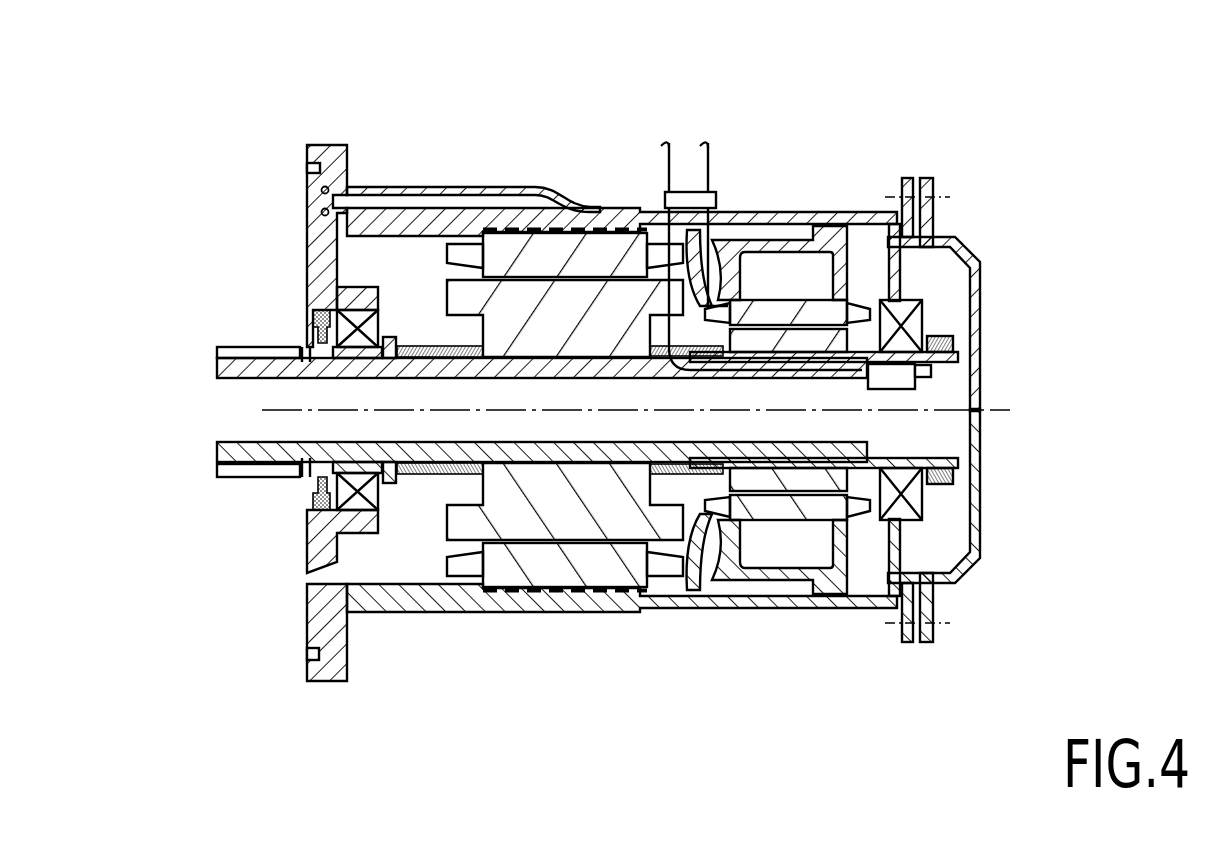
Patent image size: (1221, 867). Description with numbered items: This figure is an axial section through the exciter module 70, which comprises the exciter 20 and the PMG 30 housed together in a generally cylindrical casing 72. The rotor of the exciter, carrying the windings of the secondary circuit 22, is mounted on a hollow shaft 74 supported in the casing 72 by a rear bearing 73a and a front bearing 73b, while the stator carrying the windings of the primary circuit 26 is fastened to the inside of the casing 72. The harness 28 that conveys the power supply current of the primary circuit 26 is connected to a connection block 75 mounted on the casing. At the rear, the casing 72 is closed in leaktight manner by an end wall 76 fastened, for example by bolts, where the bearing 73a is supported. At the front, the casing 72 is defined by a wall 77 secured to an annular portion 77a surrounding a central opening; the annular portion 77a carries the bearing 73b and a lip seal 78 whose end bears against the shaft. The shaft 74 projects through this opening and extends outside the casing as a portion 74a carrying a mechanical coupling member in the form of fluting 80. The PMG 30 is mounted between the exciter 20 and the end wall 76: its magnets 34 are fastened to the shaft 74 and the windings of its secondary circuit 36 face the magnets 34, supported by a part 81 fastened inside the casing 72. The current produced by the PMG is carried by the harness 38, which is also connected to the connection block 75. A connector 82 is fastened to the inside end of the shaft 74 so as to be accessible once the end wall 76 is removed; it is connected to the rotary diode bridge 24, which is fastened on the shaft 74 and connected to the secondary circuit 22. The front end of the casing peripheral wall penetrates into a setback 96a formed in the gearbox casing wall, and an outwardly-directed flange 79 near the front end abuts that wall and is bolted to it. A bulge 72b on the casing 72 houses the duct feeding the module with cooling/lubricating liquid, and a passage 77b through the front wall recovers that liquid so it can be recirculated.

The exciter module 70 is at (604, 390).
The casing 72 is at (645, 612).
The bulge 72b is at (436, 188).
The bearing 73a is at (917, 492).
The bearing 73b is at (315, 323).
The shaft 74 is at (389, 343).
The portion of the shaft 74a is at (265, 445).
The connection block 75 is at (727, 184).
The end wall 76 is at (983, 258).
The wall 77 is at (306, 256).
The annular portion 77a is at (352, 291).
The passage 77b is at (303, 575).
The lip seal 78 is at (312, 496).
The flange 79 is at (368, 675).
The fluting 80 is at (280, 472).
The part 81 is at (740, 565).
The connector 82 is at (930, 372).
The setback 96a is at (325, 656).
The exciter 20 is at (433, 518).
The secondary circuit 22 is at (567, 510).
The rotary diode bridge 24 is at (884, 366).
The primary circuit 26 is at (516, 575).
The harness 28 is at (667, 163).
The PMG 30 is at (710, 530).
The magnets 34 is at (773, 472).
The windings of the secondary circuit of the PMG 36 is at (795, 507).
The harness 38 is at (718, 153).